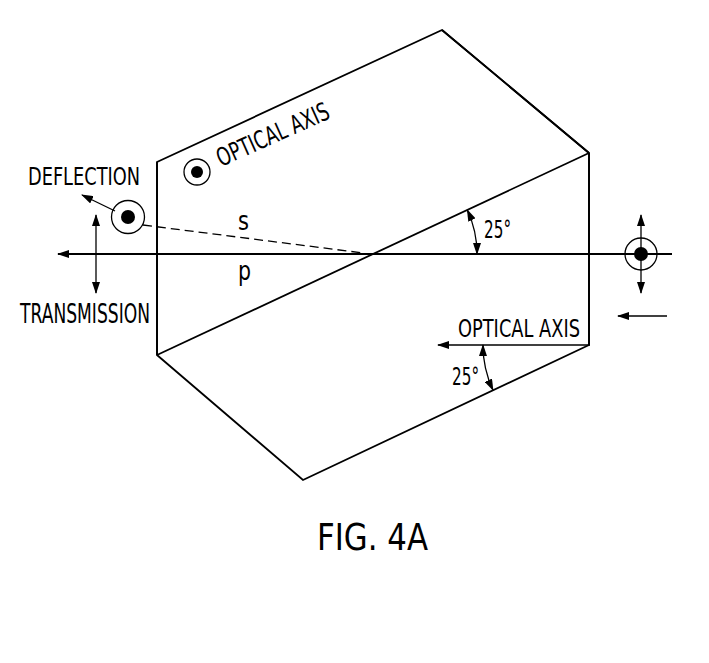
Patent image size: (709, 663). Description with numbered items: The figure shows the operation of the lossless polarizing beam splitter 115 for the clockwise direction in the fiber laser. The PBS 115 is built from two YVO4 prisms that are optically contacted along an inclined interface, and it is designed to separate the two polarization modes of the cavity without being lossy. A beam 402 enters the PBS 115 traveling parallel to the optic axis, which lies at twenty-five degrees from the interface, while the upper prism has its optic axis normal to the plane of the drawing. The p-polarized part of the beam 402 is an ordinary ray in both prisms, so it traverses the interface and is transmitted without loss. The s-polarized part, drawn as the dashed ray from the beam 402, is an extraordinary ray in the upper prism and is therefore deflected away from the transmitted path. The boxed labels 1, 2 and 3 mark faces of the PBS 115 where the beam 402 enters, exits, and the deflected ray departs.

The lossless polarizing beam splitter 115 is at (300, 96).
The beam 402 is at (521, 258).
The first surface 1 is at (590, 207).
The second surface 2 is at (158, 313).
The third surface 3 is at (518, 92).